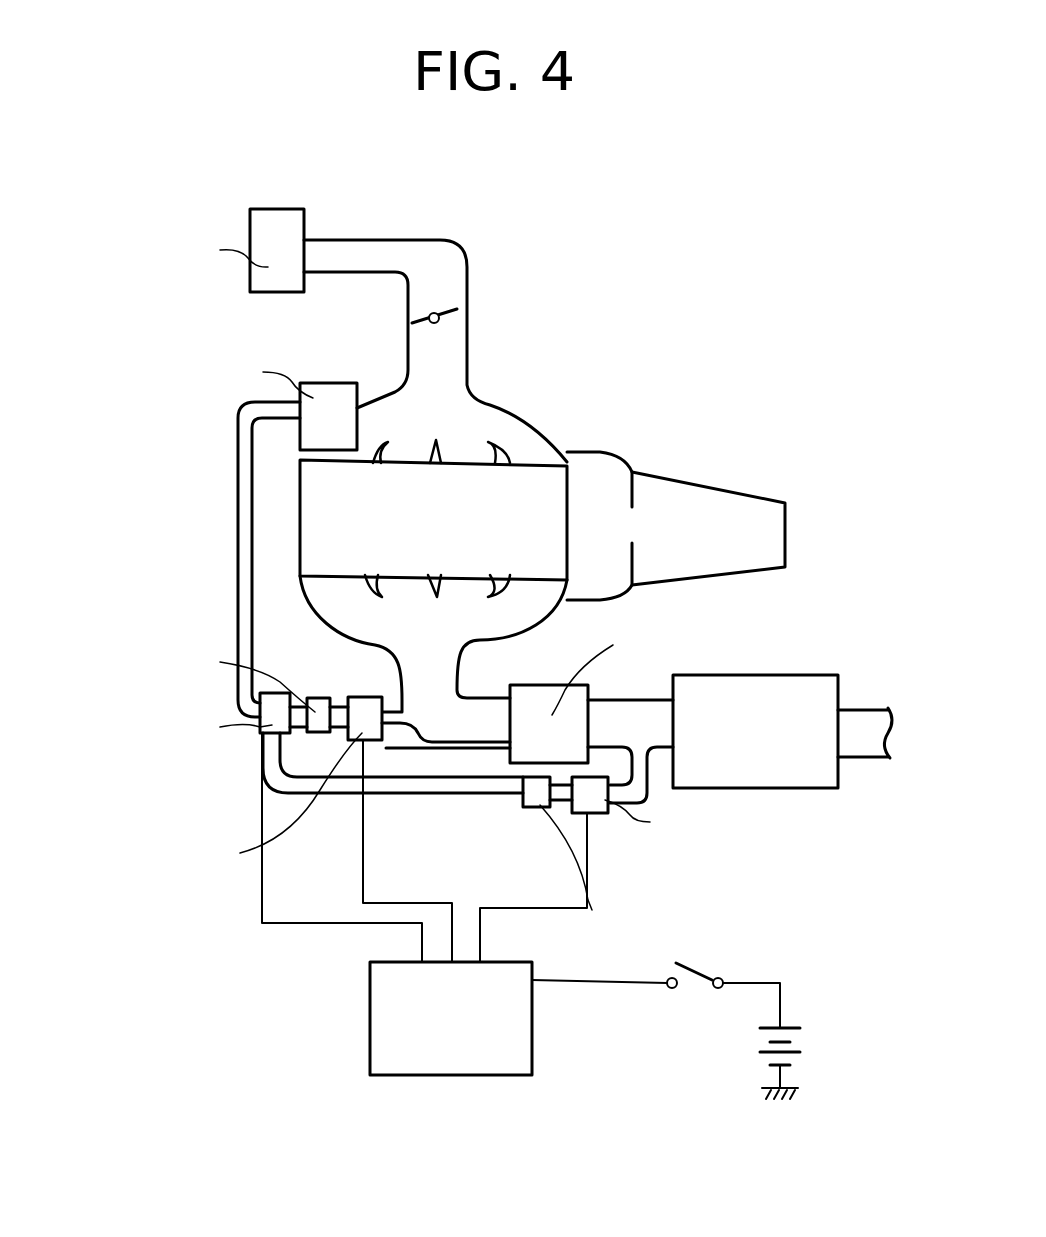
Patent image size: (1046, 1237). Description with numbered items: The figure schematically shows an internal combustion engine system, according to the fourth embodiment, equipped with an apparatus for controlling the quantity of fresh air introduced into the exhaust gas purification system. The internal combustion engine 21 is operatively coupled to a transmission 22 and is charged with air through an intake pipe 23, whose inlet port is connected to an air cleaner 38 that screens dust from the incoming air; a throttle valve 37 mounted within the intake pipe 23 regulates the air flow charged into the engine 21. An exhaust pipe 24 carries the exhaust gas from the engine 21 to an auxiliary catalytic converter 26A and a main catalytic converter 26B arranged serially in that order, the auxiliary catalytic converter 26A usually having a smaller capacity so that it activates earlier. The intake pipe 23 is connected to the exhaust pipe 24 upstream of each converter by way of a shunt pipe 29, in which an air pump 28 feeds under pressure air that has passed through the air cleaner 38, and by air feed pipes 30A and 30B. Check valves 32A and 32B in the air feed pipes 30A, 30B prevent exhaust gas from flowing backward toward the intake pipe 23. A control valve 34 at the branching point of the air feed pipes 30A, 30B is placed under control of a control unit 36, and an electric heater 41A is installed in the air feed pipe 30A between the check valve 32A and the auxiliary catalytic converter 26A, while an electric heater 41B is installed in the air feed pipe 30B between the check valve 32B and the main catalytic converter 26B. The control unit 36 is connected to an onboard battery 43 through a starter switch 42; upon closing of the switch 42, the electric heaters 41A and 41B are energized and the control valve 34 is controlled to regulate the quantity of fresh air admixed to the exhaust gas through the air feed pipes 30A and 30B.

The internal combustion engine 21 is at (510, 487).
The transmission 22 is at (718, 500).
The intake pipe 23 is at (465, 410).
The exhaust pipe 24 is at (513, 616).
The auxiliary catalytic converter 26A is at (556, 686).
The main catalytic converter 26B is at (820, 677).
The air pump 28 is at (326, 385).
The shunt pipe 29 is at (238, 525).
The air feed pipe 30A is at (390, 720).
The air feed pipe 30B is at (450, 797).
The check valve 32A is at (312, 698).
The check valve 32B is at (538, 800).
The control valve 34 is at (262, 733).
The control unit 36 is at (532, 1050).
The throttle valve 37 is at (440, 313).
The air cleaner 38 is at (274, 208).
The electric heater 41A is at (363, 697).
The electric heater 41B is at (612, 813).
The starter switch 42 is at (700, 966).
The onboard battery 43 is at (800, 1045).